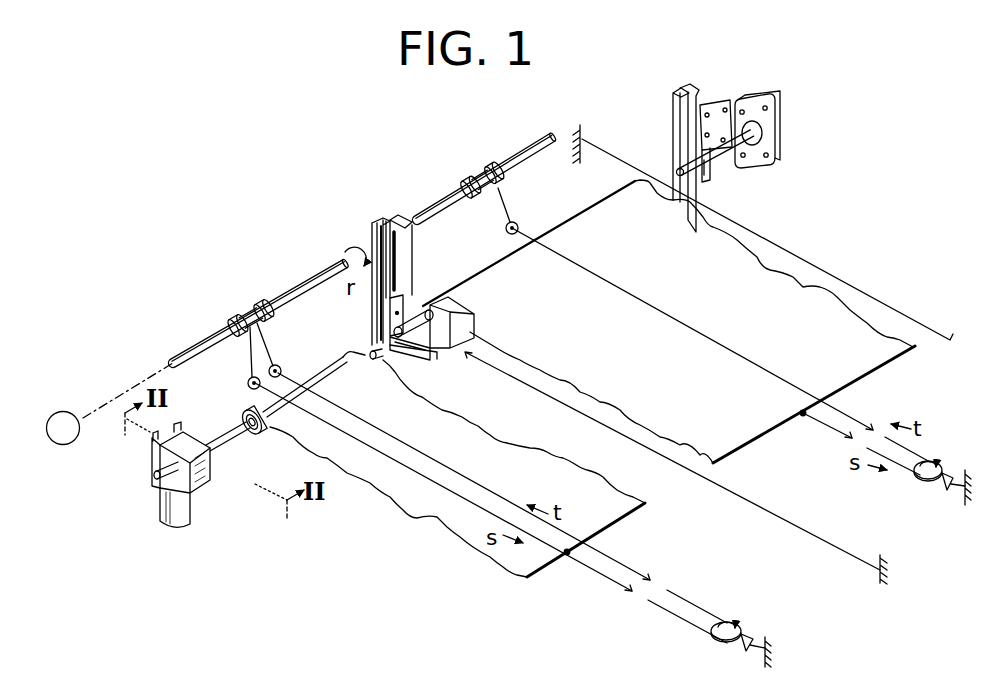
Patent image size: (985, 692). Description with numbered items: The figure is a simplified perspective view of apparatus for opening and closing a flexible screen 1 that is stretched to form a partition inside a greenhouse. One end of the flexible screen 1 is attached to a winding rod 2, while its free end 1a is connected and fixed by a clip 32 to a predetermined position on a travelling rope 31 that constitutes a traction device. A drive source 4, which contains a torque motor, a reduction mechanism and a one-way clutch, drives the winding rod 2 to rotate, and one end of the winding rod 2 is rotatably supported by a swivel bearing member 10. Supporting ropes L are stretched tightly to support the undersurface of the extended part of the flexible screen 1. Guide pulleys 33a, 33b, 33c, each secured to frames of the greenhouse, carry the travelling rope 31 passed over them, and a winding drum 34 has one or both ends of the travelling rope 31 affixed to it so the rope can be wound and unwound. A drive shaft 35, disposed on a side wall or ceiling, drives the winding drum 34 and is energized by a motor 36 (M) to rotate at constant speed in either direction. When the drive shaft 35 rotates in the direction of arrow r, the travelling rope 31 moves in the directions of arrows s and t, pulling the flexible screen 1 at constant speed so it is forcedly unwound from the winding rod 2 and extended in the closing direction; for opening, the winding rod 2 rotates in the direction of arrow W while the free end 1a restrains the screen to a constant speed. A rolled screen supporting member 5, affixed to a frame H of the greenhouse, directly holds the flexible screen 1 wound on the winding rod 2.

The flexible screen 1 is at (689, 388).
The free end 1a is at (850, 388).
The winding rod 2 is at (233, 452).
The drive source 4 is at (203, 484).
The rolled screen supporting member 5 is at (396, 321).
The swivel bearing member 10 is at (773, 110).
The travelling rope 31 is at (470, 481).
The clip 32 is at (567, 556).
The guide pulley 33a is at (740, 626).
The guide pulley 33b is at (248, 384).
The guide pulley 33c is at (293, 355).
The winding drum 34 is at (262, 308).
The drive shaft 35 is at (205, 340).
The motor 36 is at (80, 436).
The frame H is at (163, 515).
The arrow W is at (236, 434).
The supporting ropes L is at (757, 234).